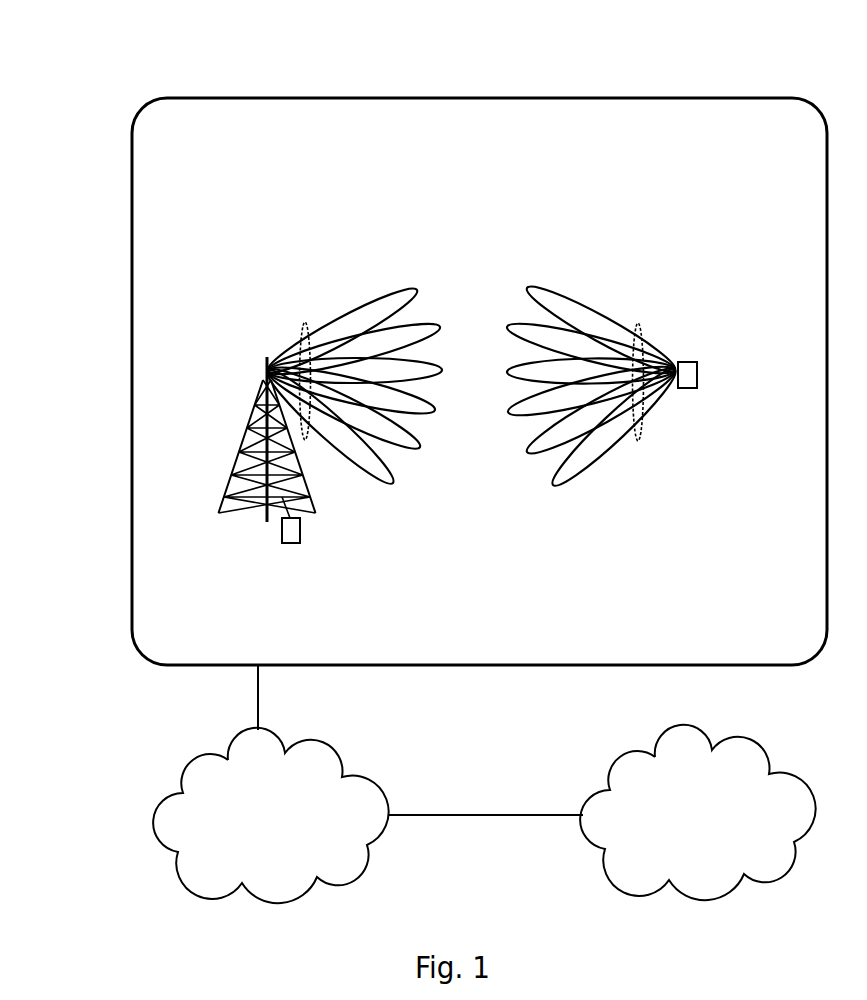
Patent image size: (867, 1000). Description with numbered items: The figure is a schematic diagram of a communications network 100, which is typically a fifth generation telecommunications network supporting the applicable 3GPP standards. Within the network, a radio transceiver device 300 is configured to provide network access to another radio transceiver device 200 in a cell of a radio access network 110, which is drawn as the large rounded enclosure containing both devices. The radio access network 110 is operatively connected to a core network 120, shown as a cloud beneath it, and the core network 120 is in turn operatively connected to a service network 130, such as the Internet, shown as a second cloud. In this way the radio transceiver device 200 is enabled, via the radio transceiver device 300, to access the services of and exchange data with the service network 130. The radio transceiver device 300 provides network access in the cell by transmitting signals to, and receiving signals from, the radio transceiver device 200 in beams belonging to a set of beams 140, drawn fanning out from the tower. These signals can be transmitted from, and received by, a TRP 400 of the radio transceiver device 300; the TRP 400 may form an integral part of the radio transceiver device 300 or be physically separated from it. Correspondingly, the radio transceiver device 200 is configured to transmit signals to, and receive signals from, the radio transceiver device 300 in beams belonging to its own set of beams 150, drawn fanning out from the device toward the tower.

The communications network 100 is at (210, 67).
The radio access network 110 is at (132, 563).
The core network 120 is at (298, 836).
The service network 130 is at (724, 834).
The set of beams 140 is at (305, 322).
The set of beams 150 is at (638, 323).
The radio transceiver device 200 is at (689, 392).
The radio transceiver device 300 is at (282, 533).
The TRP 400 is at (265, 373).